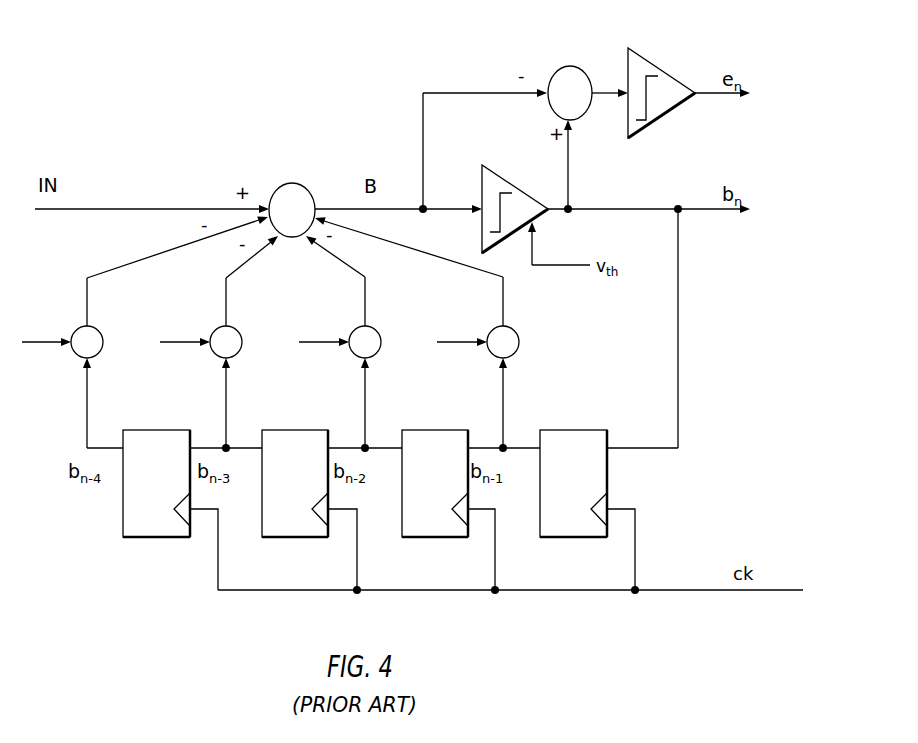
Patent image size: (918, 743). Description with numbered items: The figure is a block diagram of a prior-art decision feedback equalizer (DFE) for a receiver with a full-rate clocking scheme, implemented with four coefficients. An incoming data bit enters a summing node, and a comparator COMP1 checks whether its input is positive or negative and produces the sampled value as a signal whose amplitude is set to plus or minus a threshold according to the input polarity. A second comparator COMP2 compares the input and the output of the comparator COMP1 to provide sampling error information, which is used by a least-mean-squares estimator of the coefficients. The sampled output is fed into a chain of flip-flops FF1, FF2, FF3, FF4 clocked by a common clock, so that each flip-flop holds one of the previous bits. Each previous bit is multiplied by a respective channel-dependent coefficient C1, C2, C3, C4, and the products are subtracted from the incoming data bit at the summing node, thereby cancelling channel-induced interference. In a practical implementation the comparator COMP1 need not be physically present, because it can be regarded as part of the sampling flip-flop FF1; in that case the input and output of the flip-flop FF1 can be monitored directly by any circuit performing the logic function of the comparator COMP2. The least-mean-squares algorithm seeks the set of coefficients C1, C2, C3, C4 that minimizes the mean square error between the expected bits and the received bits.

The sampling flip-flop FF1 is at (587, 495).
The flip-flop FF2 is at (448, 495).
The flip-flop FF3 is at (309, 495).
The flip-flop FF4 is at (170, 495).
The channel-dependent coefficient C1 is at (417, 332).
The channel-dependent coefficient C2 is at (340, 342).
The channel-dependent coefficient C3 is at (219, 342).
The channel-dependent coefficient C4 is at (145, 332).
The comparator COMP1 is at (515, 188).
The second comparator COMP2 is at (670, 86).